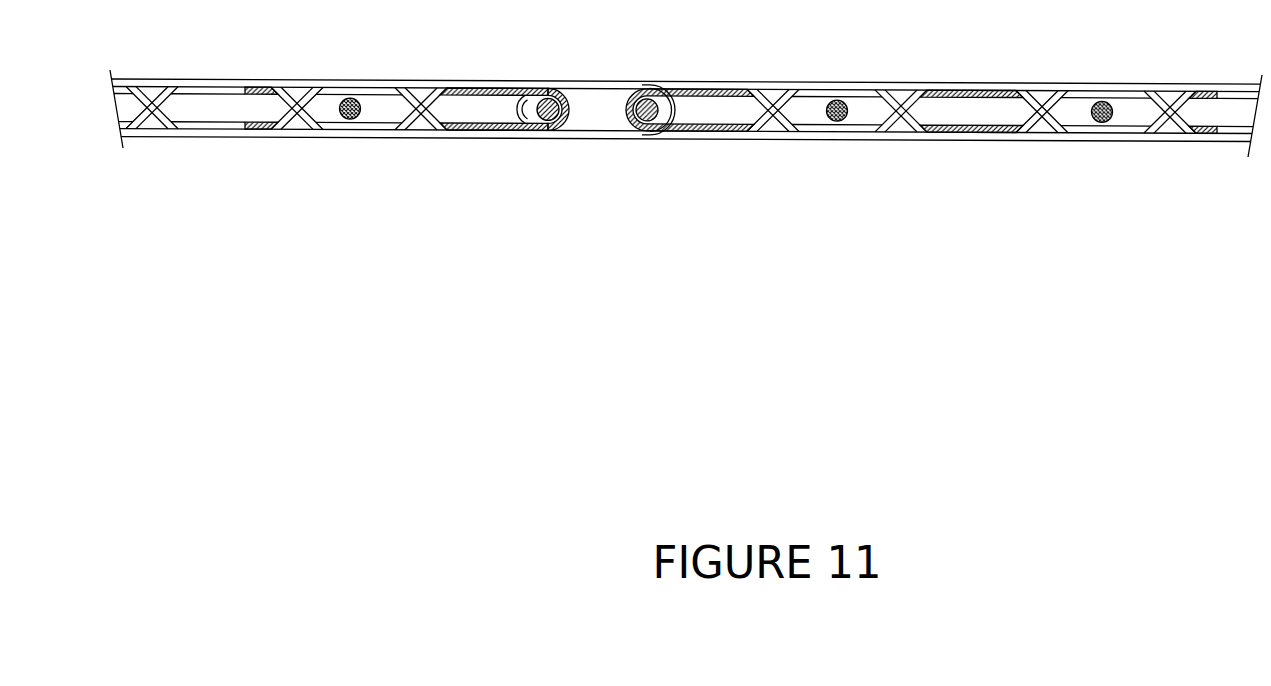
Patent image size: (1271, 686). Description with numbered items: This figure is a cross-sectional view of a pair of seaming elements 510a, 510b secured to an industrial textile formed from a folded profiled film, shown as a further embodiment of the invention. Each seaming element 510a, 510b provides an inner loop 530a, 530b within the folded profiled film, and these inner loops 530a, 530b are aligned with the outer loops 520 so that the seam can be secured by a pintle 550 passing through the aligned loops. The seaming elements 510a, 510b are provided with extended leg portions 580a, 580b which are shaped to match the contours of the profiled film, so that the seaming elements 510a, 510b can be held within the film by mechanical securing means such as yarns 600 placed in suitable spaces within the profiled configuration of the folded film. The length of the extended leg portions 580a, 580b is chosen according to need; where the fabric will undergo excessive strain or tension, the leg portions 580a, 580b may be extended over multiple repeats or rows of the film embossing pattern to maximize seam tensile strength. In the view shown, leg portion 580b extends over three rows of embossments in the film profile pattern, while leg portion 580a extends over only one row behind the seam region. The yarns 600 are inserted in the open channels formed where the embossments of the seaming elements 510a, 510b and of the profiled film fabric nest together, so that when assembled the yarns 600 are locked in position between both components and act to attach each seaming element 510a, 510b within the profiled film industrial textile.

The seaming element 510a is at (491, 87).
The seaming element 510b is at (711, 92).
The outer loops 520 is at (657, 129).
The inner loop 530a is at (558, 111).
The inner loop 530b is at (626, 109).
The pintle 550 is at (541, 129).
The extended leg portion 580a is at (239, 128).
The extended leg portion 580b is at (1210, 133).
The yarns 600 is at (354, 98).